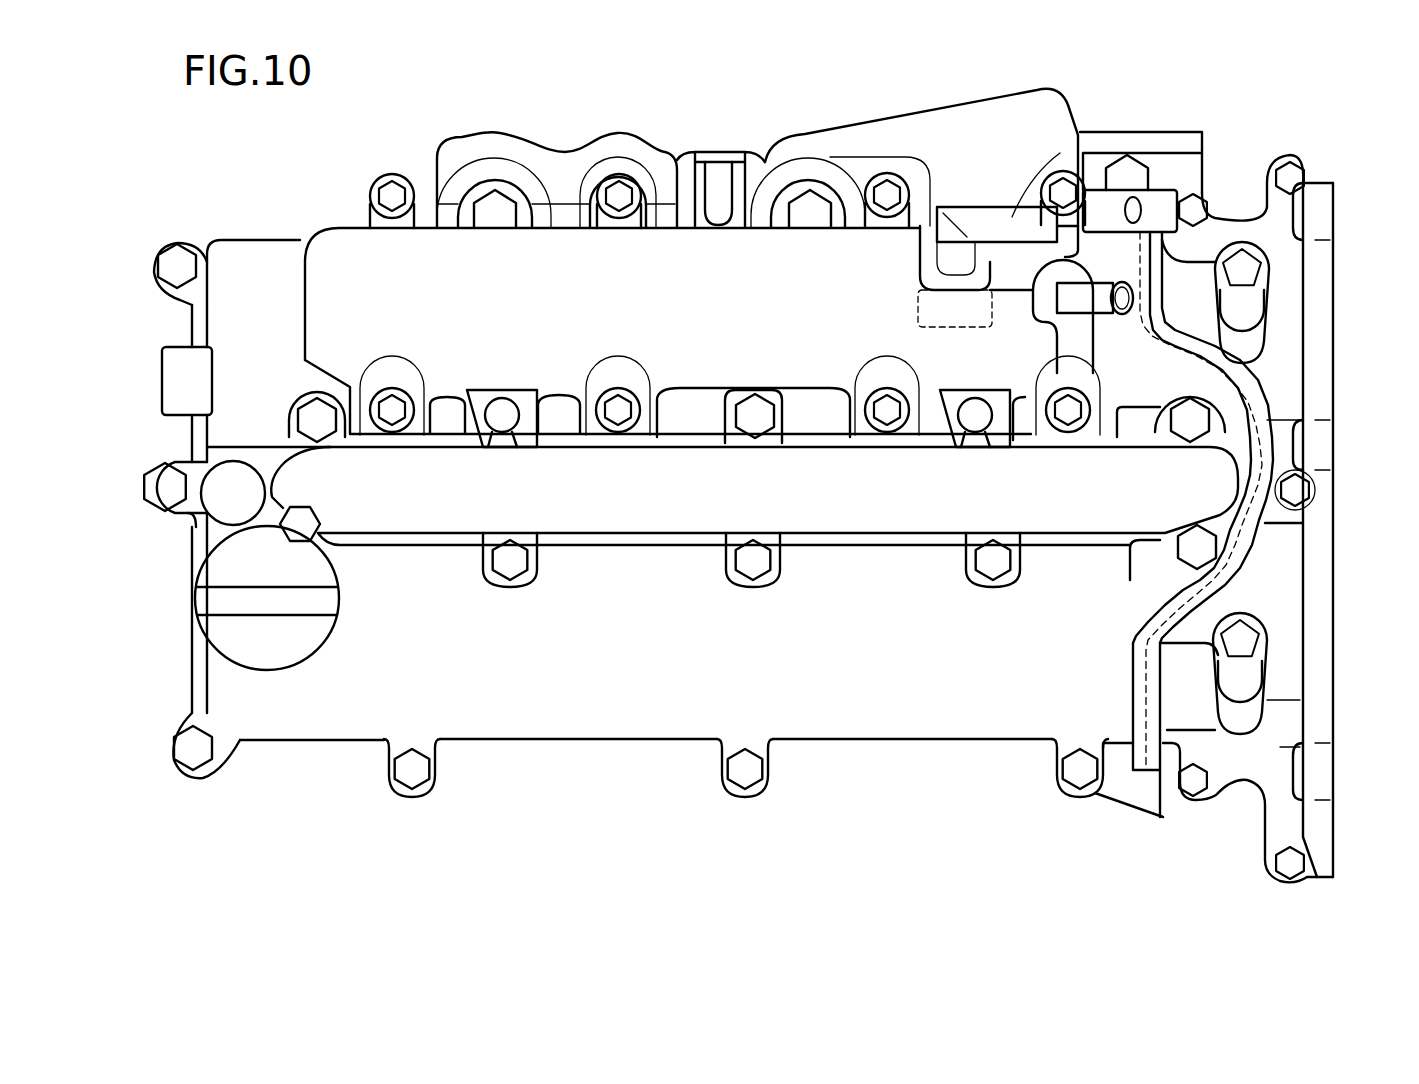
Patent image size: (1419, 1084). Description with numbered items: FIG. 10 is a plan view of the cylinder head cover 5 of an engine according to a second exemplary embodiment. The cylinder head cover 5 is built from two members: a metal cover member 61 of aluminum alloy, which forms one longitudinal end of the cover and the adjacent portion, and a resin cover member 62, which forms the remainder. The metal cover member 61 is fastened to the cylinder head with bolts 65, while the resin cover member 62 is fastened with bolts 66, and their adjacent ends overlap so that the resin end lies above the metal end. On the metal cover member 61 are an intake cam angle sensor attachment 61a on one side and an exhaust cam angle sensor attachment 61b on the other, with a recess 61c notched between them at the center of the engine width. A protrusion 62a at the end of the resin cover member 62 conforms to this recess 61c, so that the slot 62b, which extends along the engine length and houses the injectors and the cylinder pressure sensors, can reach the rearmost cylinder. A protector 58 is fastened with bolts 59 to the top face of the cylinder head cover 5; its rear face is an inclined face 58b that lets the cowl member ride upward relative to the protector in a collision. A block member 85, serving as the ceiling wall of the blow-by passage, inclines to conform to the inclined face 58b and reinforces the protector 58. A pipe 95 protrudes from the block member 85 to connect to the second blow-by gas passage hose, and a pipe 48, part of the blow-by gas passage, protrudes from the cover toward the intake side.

The cylinder head cover 5 is at (1145, 918).
The pipe 48 is at (1100, 300).
The protector 58 is at (704, 247).
The inclined face 58b is at (857, 273).
The bolts 59 is at (393, 190).
The metal cover member 61 is at (1253, 795).
The intake cam angle sensor attachment 61a is at (1243, 685).
The exhaust cam angle sensor attachment 61b is at (1243, 302).
The recess 61c is at (1247, 538).
The resin cover member 62 is at (1007, 748).
The protrusion 62a is at (1260, 397).
The slot 62b is at (965, 497).
The bolts 65 is at (1192, 207).
The bolts 66 is at (177, 267).
The block member 85 is at (978, 262).
The pipe 95 is at (1012, 217).